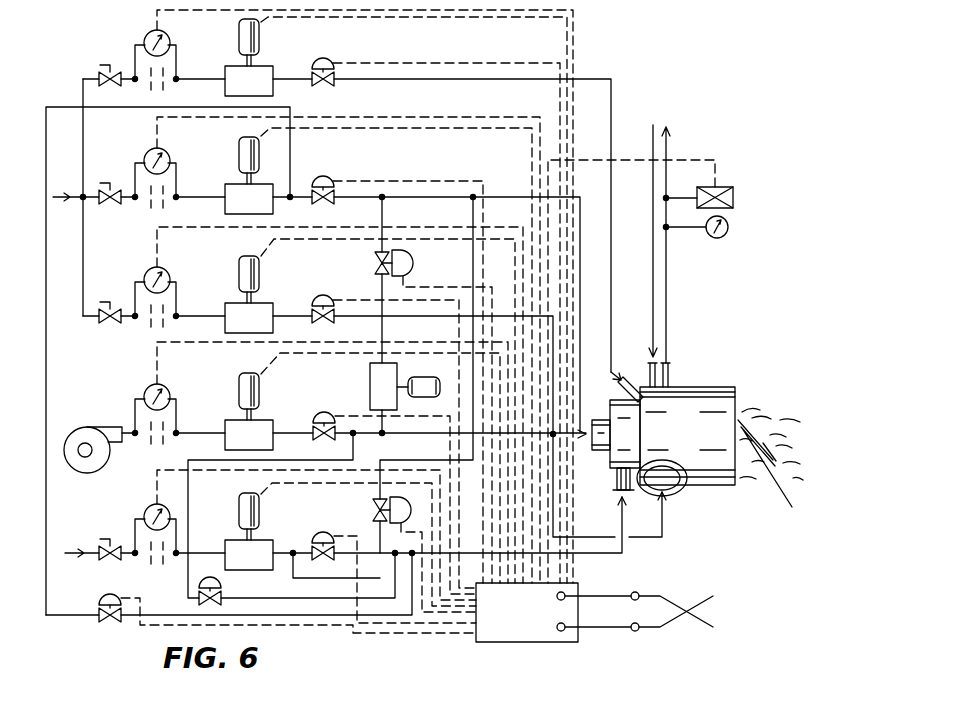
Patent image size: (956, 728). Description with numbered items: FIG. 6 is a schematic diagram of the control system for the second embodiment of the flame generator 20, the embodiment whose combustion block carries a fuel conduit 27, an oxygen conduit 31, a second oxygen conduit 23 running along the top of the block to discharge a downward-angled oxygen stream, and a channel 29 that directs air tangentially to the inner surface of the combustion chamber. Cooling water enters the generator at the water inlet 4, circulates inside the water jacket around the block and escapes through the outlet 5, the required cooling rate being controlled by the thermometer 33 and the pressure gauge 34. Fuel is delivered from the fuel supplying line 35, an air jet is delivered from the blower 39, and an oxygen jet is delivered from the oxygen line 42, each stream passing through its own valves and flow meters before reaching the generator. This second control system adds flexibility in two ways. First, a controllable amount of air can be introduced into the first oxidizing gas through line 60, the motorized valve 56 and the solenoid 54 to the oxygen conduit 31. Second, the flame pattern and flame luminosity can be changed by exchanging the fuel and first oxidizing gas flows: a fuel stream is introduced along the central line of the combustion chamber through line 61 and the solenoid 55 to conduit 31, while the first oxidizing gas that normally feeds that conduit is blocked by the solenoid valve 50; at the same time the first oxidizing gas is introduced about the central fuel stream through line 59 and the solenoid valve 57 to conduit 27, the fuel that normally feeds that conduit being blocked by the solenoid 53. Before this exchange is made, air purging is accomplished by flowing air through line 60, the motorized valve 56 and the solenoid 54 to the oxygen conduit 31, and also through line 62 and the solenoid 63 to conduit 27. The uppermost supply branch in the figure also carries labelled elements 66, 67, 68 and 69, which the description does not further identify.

The water inlet 4 is at (667, 367).
The outlet 5 is at (669, 379).
The flame generator 20 is at (738, 375).
The second oxygen conduit 23 is at (628, 378).
The fuel conduit 27 is at (614, 483).
The channel 29 is at (680, 493).
The oxygen conduit 31 is at (600, 418).
The thermometer 33 is at (726, 187).
The pressure gauge 34 is at (722, 238).
The fuel supplying line 35 is at (83, 550).
The blower 39 is at (92, 430).
The oxygen line 42 is at (66, 195).
The solenoid valve 50 is at (334, 179).
The solenoid 53 is at (317, 534).
The solenoid 54 is at (415, 262).
The solenoid 55 is at (374, 510).
The motorized valve 56 is at (370, 381).
The solenoid valve 57 is at (99, 600).
The line 59 is at (67, 106).
The line 60 is at (368, 421).
The line 61 is at (295, 579).
The line 62 is at (188, 463).
The solenoid 63 is at (222, 583).
The shutoff valve 66 is at (113, 68).
The flow meter with pressure gauge 67 is at (178, 60).
The metering pump 68 is at (229, 66).
The control valve 69 is at (318, 58).